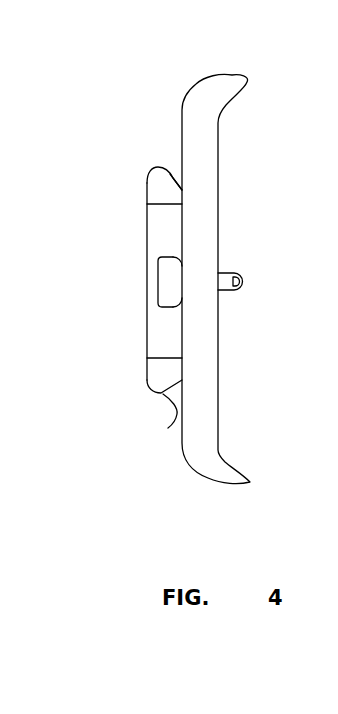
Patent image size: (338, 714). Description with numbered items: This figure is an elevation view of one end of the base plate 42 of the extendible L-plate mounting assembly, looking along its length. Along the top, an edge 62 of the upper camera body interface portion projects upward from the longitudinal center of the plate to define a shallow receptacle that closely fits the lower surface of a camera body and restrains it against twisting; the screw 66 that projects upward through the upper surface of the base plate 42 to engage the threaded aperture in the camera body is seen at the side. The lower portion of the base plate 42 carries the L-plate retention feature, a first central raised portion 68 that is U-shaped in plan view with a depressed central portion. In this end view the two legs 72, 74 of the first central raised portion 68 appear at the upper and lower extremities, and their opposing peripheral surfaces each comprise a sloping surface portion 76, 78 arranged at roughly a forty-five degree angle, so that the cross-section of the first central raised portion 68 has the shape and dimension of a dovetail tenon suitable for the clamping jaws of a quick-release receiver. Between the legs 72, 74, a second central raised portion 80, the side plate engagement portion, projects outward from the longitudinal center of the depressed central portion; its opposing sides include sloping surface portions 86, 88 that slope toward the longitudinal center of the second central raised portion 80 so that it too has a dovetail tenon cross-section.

The base plate 42 is at (158, 466).
The edge 62 is at (237, 75).
The screw 66 is at (236, 276).
The first central raised portion 68 is at (156, 286).
The leg 72 is at (150, 172).
The leg 74 is at (158, 392).
The sloping surface portion 76 is at (178, 168).
The sloping surface portion 78 is at (173, 416).
The second central raised portion 80 is at (165, 286).
The sloping surface portion 86 is at (183, 263).
The sloping surface portion 88 is at (180, 302).